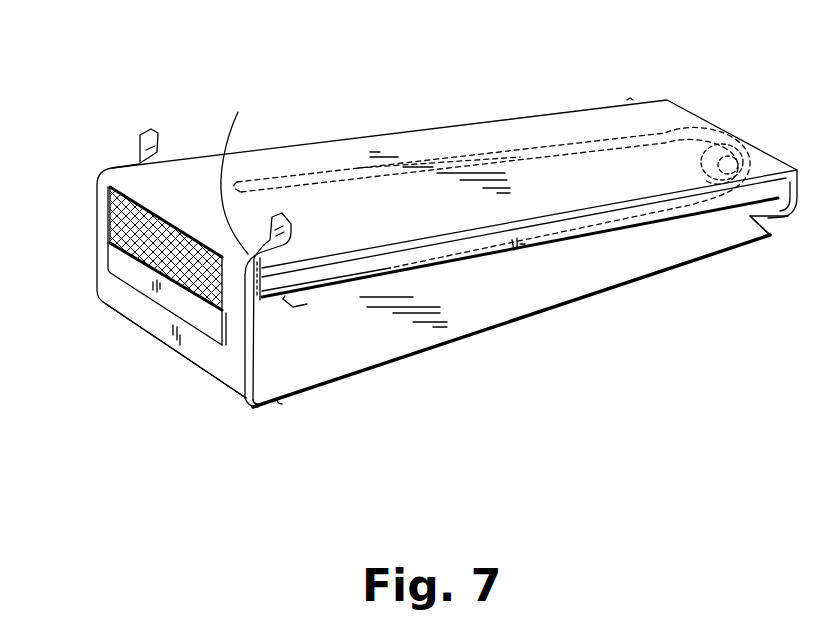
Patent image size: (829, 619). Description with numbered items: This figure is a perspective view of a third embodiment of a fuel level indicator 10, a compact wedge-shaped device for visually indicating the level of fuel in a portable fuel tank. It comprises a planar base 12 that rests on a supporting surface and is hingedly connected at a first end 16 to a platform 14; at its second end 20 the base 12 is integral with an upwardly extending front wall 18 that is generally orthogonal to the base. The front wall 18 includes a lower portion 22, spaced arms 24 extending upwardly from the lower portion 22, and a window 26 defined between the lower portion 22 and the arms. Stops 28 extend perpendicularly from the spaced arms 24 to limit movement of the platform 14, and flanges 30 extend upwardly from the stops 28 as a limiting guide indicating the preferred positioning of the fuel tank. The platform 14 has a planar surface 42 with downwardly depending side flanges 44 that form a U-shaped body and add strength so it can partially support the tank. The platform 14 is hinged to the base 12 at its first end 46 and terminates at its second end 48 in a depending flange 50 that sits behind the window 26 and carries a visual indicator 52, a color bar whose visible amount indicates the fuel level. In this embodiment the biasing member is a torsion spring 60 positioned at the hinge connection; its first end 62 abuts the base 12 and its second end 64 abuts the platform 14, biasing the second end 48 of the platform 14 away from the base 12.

The fuel level indicator 10 is at (522, 376).
The base 12 is at (556, 284).
The platform 14 is at (567, 148).
The first end 16 is at (750, 222).
The front wall 18 is at (193, 362).
The second end 20 is at (277, 400).
The lower portion 22 is at (153, 337).
The spaced arms 24 is at (100, 210).
The window 26 is at (117, 230).
The stops 28 is at (140, 168).
The flanges 30 is at (143, 133).
The planar surface 42 is at (620, 135).
The side flanges 44 is at (610, 226).
The first end 46 is at (668, 120).
The second end 48 is at (173, 212).
The depending flange 50 is at (258, 305).
The visual indicator 52 is at (140, 280).
The torsion spring 60 is at (723, 133).
The first end 62 is at (300, 302).
The second end 64 is at (357, 167).